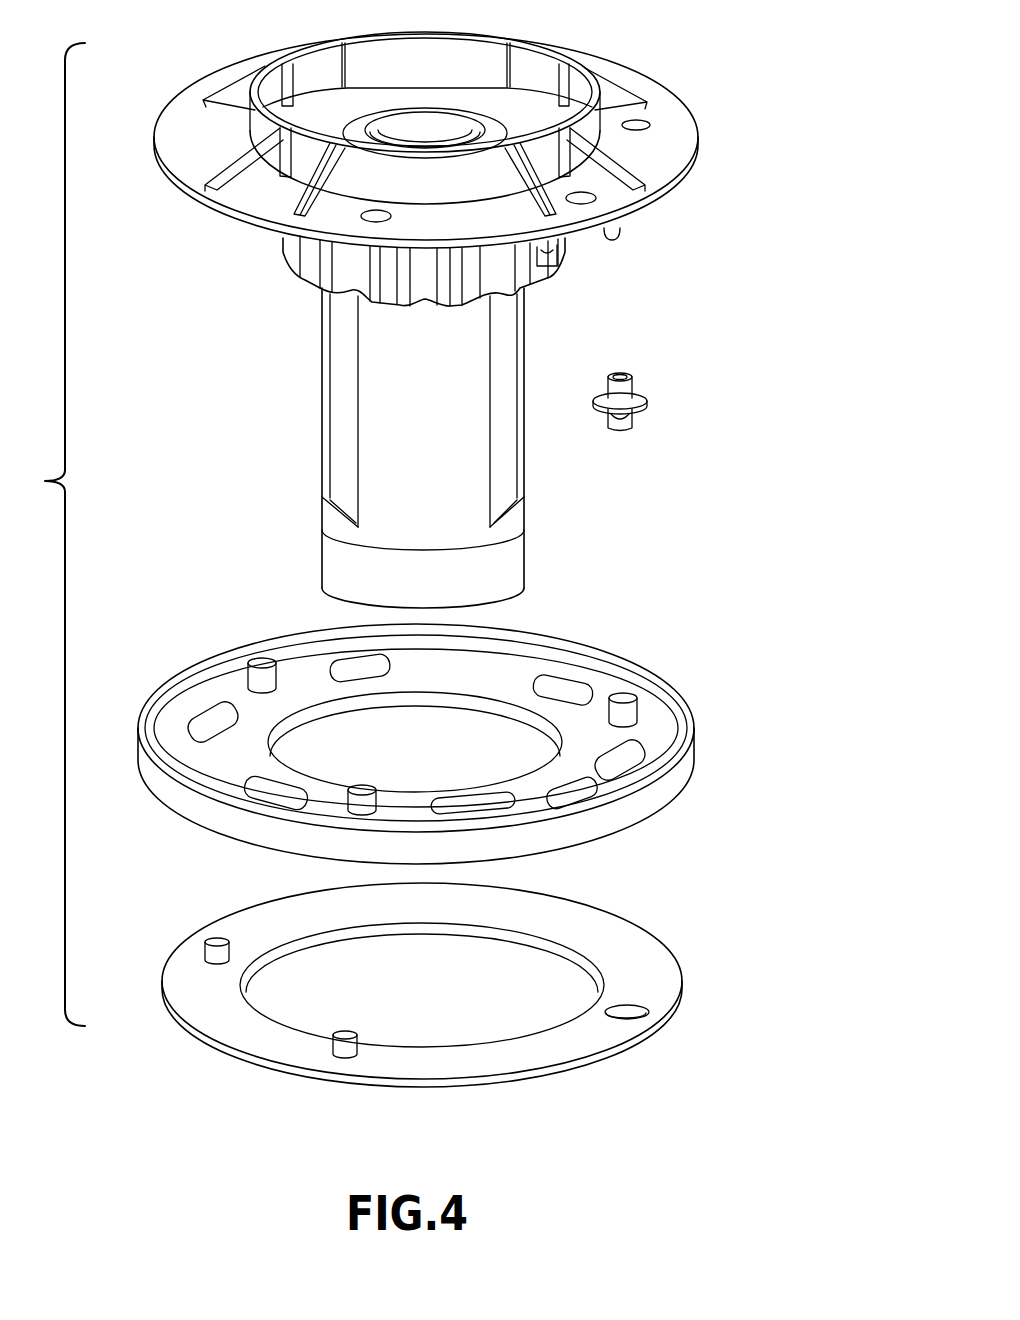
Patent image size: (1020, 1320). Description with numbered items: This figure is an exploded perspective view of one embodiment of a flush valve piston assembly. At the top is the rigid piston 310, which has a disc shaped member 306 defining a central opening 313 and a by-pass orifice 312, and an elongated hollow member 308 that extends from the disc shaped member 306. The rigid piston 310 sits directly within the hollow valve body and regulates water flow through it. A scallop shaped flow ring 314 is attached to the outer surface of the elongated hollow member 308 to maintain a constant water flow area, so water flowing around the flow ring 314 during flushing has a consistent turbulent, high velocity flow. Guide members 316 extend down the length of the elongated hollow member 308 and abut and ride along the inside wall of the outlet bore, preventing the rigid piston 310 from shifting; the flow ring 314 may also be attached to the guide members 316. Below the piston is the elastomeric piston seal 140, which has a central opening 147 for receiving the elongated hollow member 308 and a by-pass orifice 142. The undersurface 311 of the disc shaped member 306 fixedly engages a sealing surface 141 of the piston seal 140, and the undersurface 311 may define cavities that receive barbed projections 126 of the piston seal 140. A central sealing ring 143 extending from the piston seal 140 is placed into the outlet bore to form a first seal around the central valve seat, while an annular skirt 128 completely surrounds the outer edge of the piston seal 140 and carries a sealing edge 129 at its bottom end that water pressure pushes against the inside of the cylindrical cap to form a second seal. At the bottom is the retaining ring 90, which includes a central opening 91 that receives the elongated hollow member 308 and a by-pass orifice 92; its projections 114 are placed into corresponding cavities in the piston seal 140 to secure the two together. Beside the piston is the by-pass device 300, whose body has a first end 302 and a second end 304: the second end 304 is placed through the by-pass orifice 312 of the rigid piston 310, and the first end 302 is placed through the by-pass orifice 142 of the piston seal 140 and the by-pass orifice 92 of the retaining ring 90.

The retaining ring 90 is at (442, 985).
The central opening 91 is at (430, 1010).
The by-pass orifice 92 is at (630, 1012).
The projections 114 is at (217, 942).
The projections 126 is at (263, 663).
The annular skirt 128 is at (145, 767).
The sealing edge 129 is at (656, 822).
The piston seal 140 is at (456, 720).
The sealing surface 141 is at (515, 672).
The by-pass orifice 142 is at (625, 697).
The central sealing ring 143 is at (316, 722).
The central opening 147 is at (445, 766).
The by-pass device 300 is at (665, 393).
The first end 302 is at (623, 432).
The second end 304 is at (620, 375).
The disc shaped member 306 is at (175, 138).
The elongated hollow member 308 is at (352, 563).
The rigid piston 310 is at (488, 305).
The undersurface 311 is at (633, 220).
The by-pass orifice 312 is at (581, 199).
The central opening 313 is at (427, 148).
The scallop shaped flow ring 314 is at (325, 277).
The guide members 316 is at (343, 392).